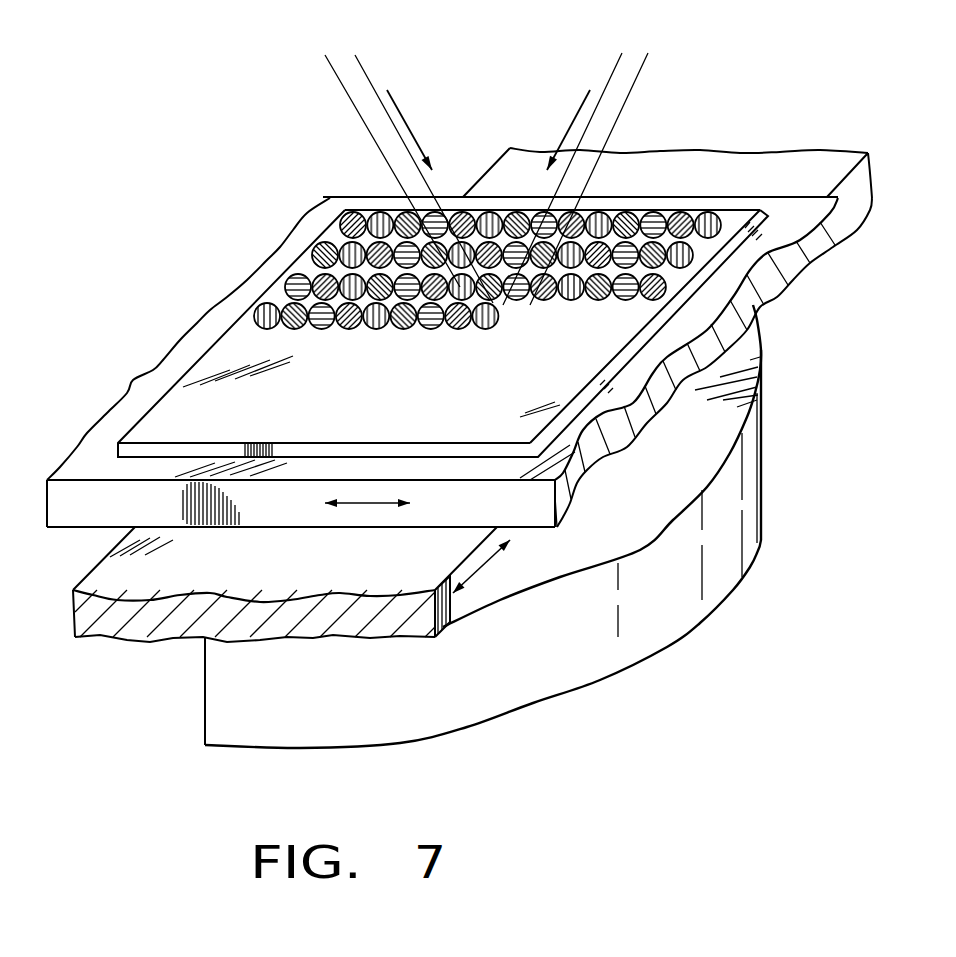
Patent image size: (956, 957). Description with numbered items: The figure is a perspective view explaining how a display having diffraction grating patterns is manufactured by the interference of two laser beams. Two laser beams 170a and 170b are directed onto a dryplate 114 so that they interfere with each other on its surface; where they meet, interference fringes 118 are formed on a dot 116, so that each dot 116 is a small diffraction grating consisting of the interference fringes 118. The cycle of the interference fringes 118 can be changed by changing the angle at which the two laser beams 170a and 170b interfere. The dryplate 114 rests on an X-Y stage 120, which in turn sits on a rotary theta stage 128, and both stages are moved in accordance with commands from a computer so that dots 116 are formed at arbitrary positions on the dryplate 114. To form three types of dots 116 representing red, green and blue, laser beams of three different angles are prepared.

The dryplate 114 is at (587, 367).
The dot 116 is at (253, 318).
The interference fringes 118 is at (264, 300).
The X-Y stage 120 is at (547, 512).
The rotary (θ) stage 128 is at (755, 490).
The laser beam 170a is at (357, 67).
The laser beam 170b is at (662, 42).